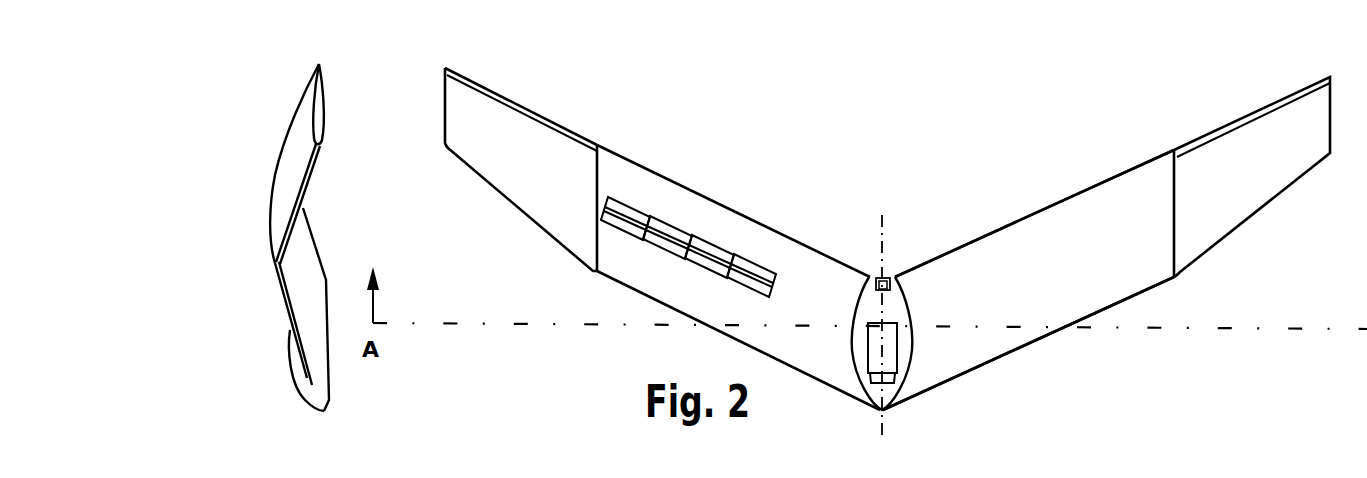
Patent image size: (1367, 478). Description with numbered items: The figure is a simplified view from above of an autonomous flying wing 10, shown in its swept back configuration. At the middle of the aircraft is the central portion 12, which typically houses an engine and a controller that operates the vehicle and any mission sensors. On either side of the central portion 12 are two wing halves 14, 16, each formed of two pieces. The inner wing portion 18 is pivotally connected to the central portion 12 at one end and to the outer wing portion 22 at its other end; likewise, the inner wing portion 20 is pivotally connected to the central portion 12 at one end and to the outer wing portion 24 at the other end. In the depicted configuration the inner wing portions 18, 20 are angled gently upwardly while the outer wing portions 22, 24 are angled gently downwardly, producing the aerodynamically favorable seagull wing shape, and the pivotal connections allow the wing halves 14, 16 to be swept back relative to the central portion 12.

The autonomous flying wing 10 is at (983, 195).
The central portion 12 is at (886, 248).
The wing half 14 is at (1180, 287).
The wing half 16 is at (582, 285).
The inner wing portion 18 is at (1063, 213).
The inner wing portion 20 is at (750, 233).
The outer wing portion 22 is at (1257, 128).
The outer wing portion 24 is at (528, 128).